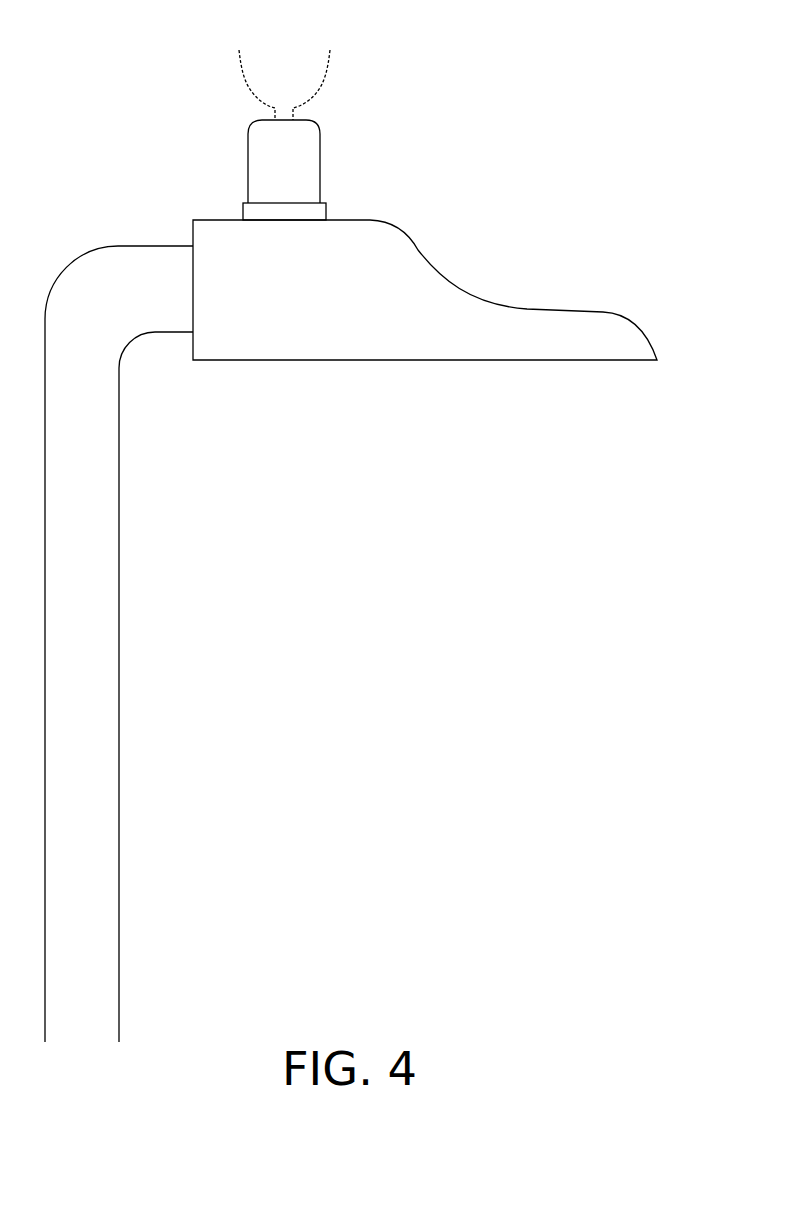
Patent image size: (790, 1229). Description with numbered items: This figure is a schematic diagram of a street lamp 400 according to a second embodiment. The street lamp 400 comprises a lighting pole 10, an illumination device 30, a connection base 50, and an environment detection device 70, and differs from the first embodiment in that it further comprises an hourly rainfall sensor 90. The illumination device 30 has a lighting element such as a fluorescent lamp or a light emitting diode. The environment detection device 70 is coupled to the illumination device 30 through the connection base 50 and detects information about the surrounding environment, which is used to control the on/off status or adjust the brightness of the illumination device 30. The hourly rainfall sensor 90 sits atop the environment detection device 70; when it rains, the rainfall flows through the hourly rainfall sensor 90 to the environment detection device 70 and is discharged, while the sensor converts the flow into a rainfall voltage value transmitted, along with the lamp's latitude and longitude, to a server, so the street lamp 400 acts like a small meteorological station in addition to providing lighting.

The lighting pole 10 is at (119, 465).
The illumination device 30 is at (575, 310).
The connection base 50 is at (327, 212).
The environment detection device 70 is at (320, 160).
The hourly rainfall sensor 90 is at (325, 84).
The street lamp 400 is at (697, 1031).